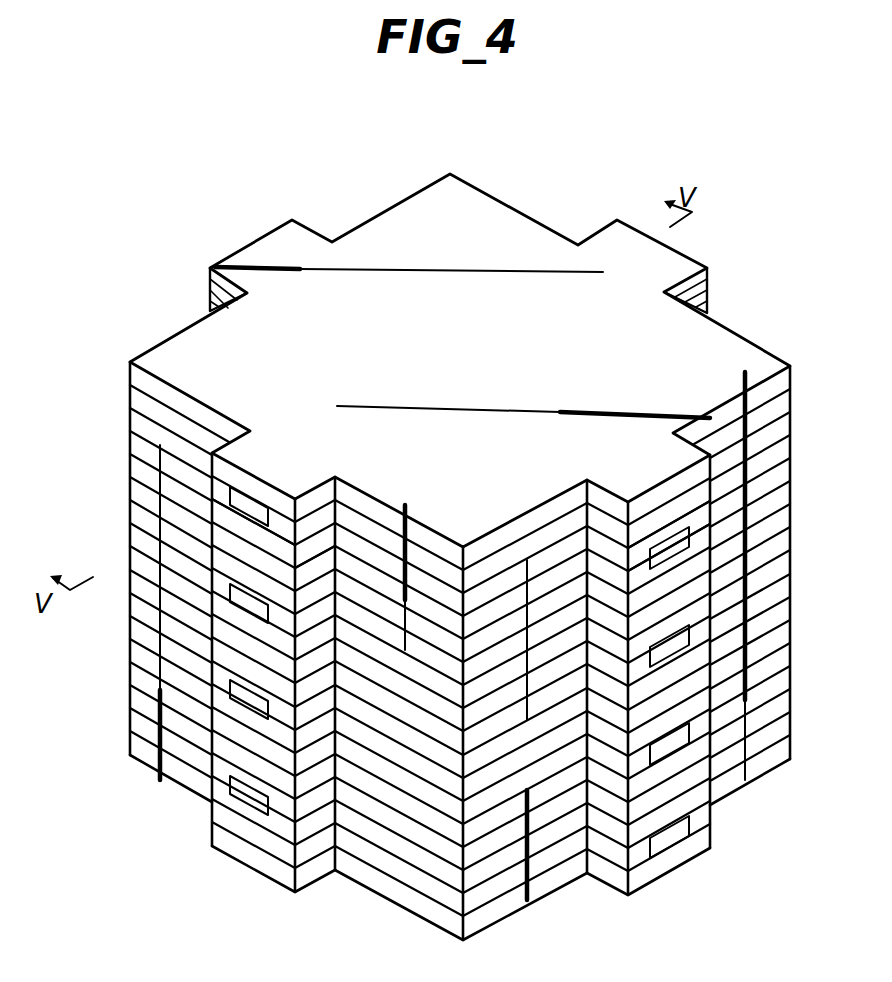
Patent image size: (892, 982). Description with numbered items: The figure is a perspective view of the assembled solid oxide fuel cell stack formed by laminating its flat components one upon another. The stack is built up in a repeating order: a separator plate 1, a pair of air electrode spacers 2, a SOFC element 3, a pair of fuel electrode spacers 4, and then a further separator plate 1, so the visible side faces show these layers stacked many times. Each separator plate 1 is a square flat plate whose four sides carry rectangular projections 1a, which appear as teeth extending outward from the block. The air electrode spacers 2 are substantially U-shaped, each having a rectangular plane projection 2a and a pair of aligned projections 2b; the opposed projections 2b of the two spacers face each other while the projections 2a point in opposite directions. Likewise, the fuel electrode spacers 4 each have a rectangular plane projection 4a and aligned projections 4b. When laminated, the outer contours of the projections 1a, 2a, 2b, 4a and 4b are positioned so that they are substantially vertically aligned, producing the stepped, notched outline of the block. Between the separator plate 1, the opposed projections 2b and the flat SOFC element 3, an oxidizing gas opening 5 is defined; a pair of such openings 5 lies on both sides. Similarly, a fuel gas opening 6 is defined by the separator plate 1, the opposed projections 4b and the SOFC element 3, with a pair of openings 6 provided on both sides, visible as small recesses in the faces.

The separator plate 1 is at (488, 196).
The rectangular projections 1a is at (262, 240).
The air electrode spacers 2 is at (131, 397).
The SOFC element 3 is at (131, 420).
The fuel electrode spacers 4 is at (131, 443).
The rectangular plane projection 2a is at (660, 563).
The projections 2b is at (271, 524).
The rectangular plane projection 4a is at (318, 560).
The projections 4b is at (700, 540).
The oxidizing gas opening 5 is at (234, 490).
The fuel gas opening 6 is at (626, 496).